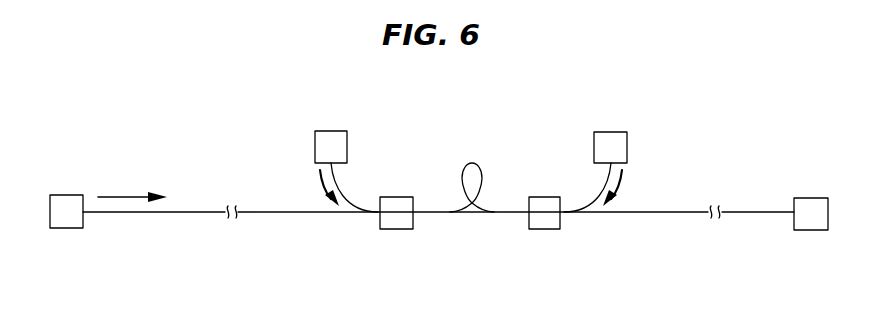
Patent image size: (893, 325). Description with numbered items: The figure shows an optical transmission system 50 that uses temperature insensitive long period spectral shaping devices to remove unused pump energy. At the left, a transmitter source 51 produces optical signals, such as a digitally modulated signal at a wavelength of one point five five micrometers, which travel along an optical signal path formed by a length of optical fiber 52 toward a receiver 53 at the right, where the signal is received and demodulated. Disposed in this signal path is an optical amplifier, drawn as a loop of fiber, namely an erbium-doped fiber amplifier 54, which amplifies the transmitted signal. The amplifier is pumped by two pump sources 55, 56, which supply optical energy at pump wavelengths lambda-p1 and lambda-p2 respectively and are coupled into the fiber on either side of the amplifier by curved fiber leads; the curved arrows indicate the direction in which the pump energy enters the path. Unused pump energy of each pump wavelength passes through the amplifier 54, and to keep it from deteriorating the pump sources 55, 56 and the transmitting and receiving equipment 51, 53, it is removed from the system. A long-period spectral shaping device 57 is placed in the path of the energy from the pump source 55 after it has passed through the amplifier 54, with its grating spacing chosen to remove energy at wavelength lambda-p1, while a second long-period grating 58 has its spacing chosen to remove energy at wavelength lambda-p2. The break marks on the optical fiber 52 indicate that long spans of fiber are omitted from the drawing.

The optical transmission system 50 is at (747, 131).
The transmitter source 51 is at (65, 195).
The optical fiber 52 is at (127, 213).
The receiver 53 is at (812, 198).
The erbium-doped fiber amplifier 54 is at (472, 163).
The pump source 55 is at (612, 132).
The pump source 56 is at (331, 131).
The long-period spectral shaping device 57 is at (397, 229).
The second long-period grating 58 is at (545, 229).